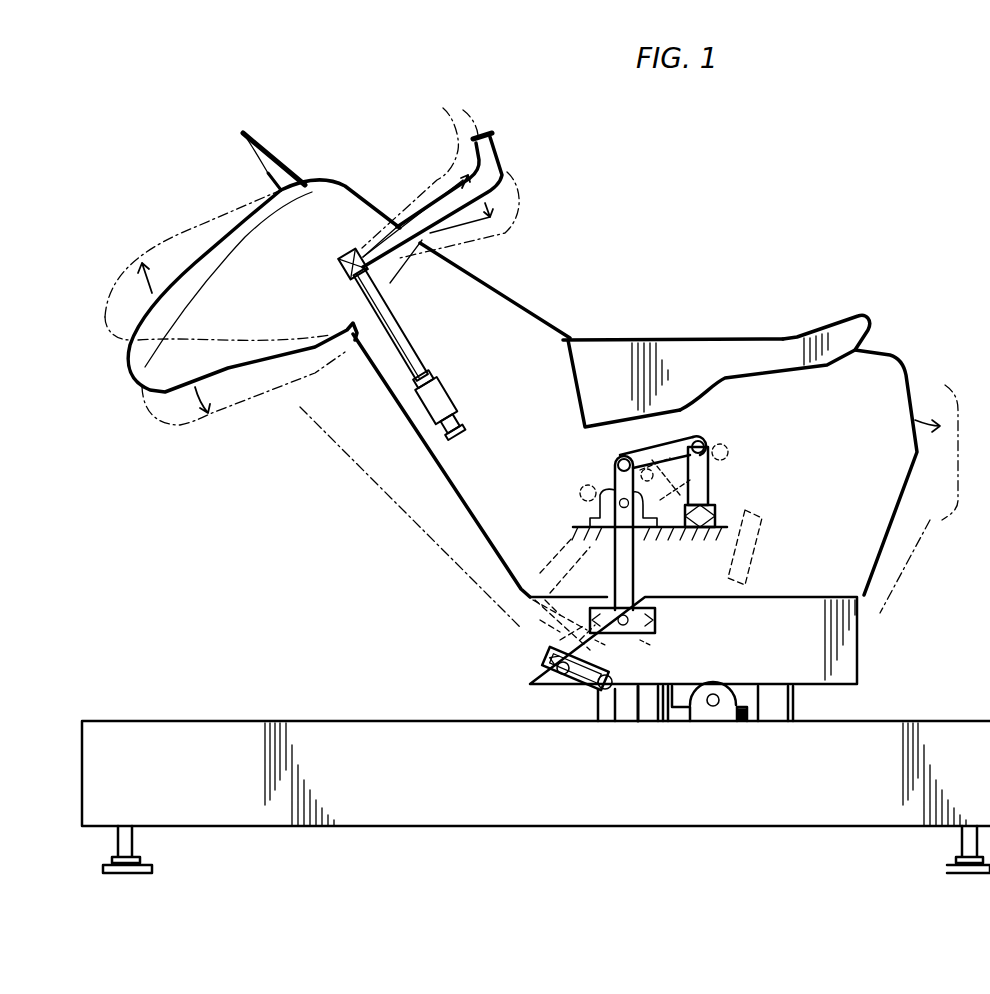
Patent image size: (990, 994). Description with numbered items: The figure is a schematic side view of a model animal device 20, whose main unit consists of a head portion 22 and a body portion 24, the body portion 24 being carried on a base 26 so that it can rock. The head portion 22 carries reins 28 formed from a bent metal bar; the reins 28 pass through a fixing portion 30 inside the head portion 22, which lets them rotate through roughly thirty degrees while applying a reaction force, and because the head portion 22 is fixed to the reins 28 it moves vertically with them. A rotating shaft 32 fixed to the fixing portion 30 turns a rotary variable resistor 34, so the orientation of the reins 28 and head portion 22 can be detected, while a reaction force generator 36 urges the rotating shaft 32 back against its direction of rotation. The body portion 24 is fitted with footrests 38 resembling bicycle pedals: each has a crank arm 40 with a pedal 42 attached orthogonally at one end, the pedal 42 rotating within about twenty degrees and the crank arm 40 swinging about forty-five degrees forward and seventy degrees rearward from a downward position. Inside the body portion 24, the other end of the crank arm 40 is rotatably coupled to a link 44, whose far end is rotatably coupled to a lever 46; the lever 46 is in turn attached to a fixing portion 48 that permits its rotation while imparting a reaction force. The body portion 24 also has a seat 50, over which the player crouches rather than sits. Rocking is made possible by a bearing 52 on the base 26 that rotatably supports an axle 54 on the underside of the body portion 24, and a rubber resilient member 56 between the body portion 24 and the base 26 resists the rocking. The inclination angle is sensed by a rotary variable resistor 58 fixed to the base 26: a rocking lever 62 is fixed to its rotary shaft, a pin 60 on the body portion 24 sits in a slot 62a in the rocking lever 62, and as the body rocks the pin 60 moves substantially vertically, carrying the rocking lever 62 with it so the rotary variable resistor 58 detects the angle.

The model animal device 20 is at (716, 246).
The head portion 22 is at (334, 190).
The body portion 24 is at (497, 518).
The base 26 is at (212, 730).
The reins 28 is at (494, 141).
The fixing portion 30 is at (340, 264).
The rotating shaft 32 is at (395, 327).
The rotary variable resistor 34 is at (462, 430).
The reaction force generator 36 is at (440, 392).
The footrest 38 is at (752, 598).
The crank arm 40 is at (640, 563).
The pedal 42 is at (655, 625).
The link 44 is at (660, 452).
The lever 46 is at (710, 485).
The fixing portion 48 is at (725, 512).
The seat 50 is at (757, 345).
The bearing 52 is at (705, 714).
The axle 54 is at (720, 712).
The resilient member 56 is at (647, 707).
The rotary variable resistor 58 is at (622, 692).
The pin 60 is at (560, 690).
The rocking lever 62 is at (590, 690).
The slot 62a is at (535, 660).